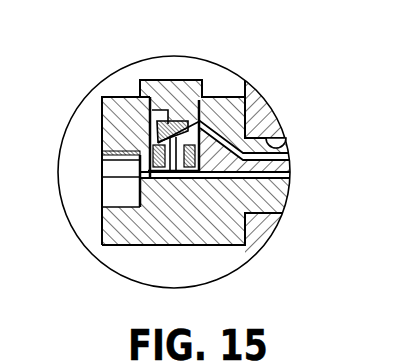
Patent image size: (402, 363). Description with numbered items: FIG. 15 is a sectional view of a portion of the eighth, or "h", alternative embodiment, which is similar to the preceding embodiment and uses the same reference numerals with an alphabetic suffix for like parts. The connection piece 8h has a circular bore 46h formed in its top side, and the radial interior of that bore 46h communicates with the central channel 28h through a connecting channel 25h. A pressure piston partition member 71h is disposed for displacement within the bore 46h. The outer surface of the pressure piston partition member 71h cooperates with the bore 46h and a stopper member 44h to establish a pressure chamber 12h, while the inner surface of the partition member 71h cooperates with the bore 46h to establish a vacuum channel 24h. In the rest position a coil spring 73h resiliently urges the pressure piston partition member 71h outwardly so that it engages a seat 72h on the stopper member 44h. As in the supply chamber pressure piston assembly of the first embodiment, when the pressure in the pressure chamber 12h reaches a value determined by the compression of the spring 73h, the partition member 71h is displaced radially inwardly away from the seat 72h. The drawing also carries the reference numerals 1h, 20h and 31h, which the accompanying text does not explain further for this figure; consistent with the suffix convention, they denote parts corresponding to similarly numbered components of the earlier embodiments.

The housing 1h is at (258, 234).
The connection piece 8h is at (222, 233).
The pressure chamber 12h is at (212, 97).
The chamber 20h is at (118, 187).
The vacuum channel 24h is at (212, 125).
The connecting channel 25h is at (173, 180).
The central channel 28h is at (284, 176).
The port 31h is at (267, 146).
The stopper member 44h is at (187, 86).
The circular bore 46h is at (147, 131).
The pressure piston partition member 71h is at (154, 124).
The seat 72h is at (161, 118).
The coil spring 73h is at (117, 153).